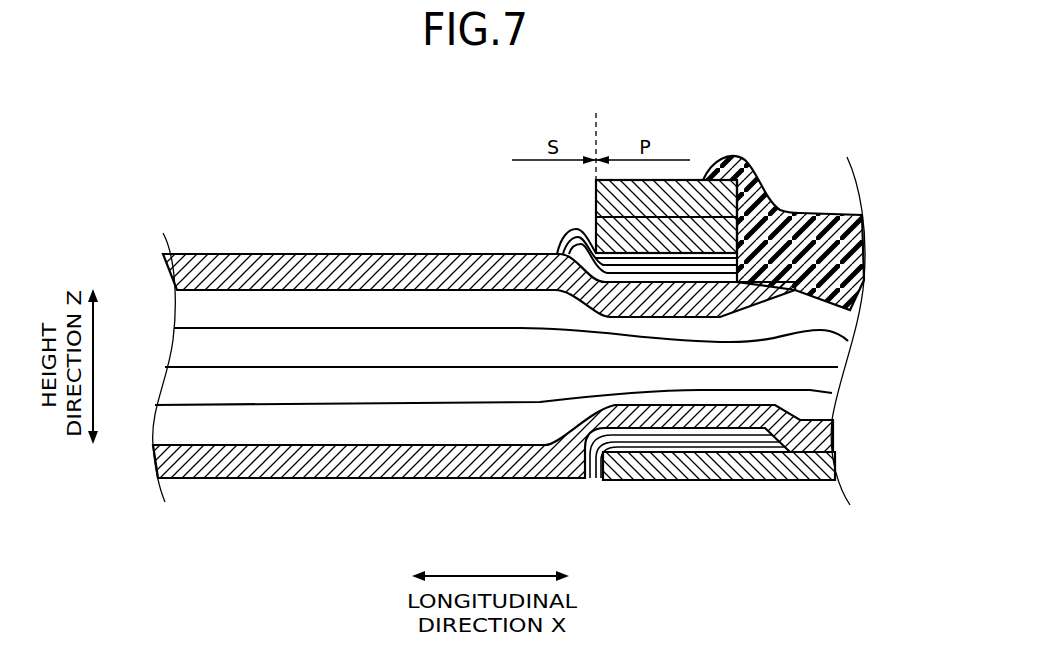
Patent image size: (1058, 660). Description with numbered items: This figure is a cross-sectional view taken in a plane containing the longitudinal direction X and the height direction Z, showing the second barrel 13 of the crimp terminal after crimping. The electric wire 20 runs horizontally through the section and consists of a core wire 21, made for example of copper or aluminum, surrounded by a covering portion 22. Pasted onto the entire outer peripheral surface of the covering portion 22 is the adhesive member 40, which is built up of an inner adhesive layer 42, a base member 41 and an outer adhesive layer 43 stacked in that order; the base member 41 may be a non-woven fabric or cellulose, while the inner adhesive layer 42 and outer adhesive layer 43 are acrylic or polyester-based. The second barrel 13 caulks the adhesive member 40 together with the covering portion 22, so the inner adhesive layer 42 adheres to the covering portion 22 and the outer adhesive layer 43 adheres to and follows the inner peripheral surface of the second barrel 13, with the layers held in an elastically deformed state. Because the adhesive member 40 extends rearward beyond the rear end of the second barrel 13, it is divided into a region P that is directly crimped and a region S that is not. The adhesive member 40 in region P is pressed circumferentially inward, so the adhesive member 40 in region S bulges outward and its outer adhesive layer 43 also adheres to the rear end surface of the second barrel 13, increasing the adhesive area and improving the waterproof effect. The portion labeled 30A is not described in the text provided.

The second barrel 13 is at (697, 178).
The electric wire 20 is at (259, 234).
The core wire 21 is at (720, 327).
The covering portion 22 is at (323, 252).
The conductive connection portion 30A is at (746, 159).
The adhesive member 40 is at (557, 218).
The base member 41 is at (742, 265).
The inner adhesive layer 42 is at (718, 274).
The outer adhesive layer 43 is at (745, 258).